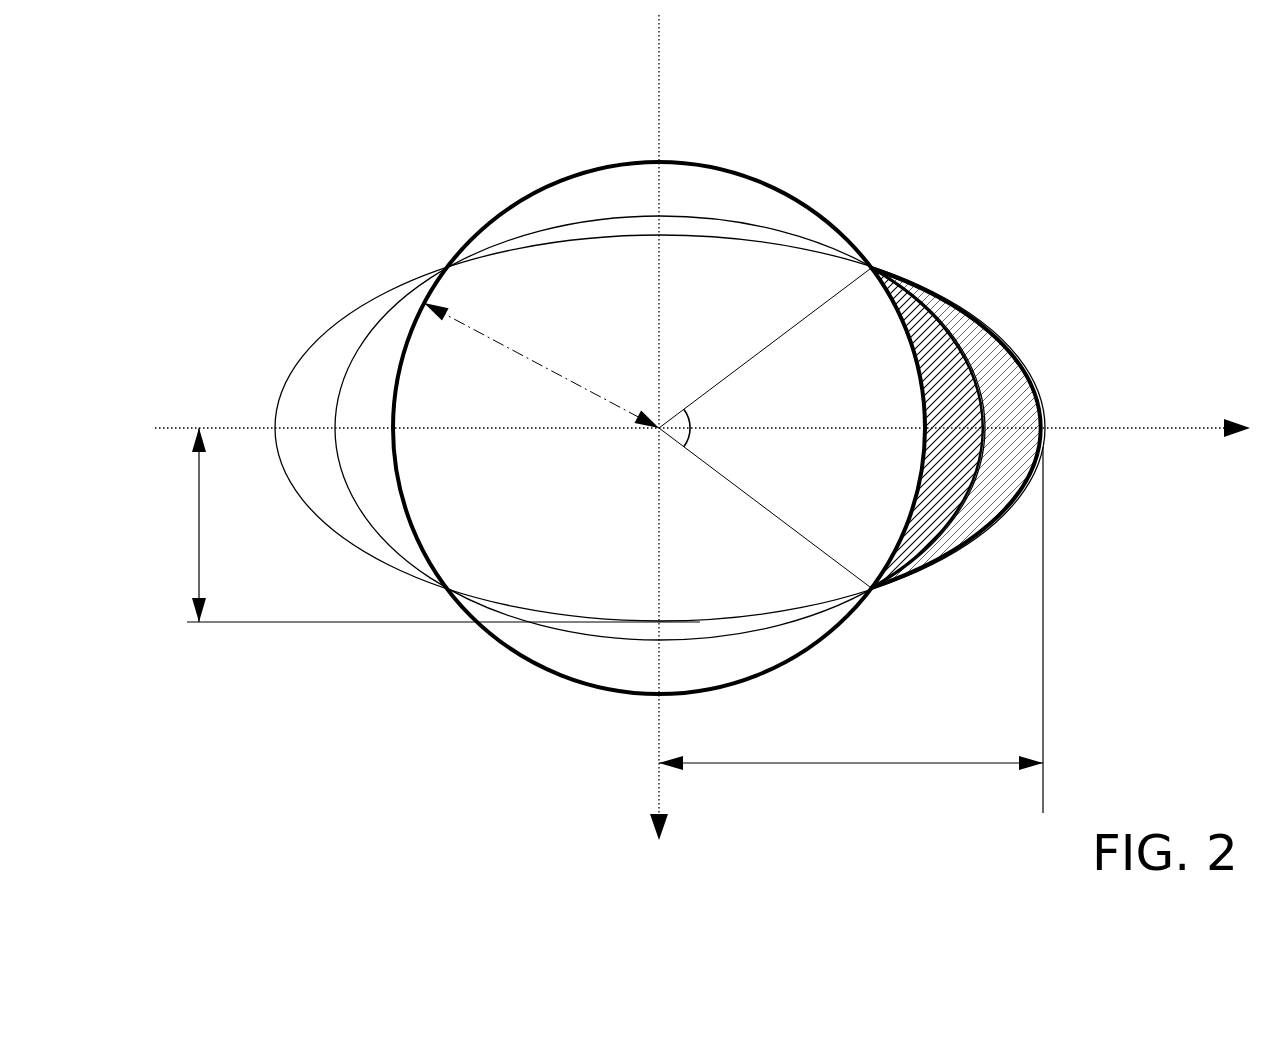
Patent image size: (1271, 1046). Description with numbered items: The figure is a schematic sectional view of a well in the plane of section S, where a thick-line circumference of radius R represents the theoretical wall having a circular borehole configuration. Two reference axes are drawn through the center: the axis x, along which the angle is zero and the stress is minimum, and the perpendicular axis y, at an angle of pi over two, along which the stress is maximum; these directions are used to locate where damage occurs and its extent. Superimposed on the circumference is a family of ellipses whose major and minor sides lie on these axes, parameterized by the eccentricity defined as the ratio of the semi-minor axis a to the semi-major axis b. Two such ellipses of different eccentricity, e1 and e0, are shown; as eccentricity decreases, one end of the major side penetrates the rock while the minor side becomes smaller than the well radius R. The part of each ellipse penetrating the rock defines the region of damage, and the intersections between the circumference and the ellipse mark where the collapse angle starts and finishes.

The plane of section S is at (497, 213).
The ellipse of eccentricity e0 is at (997, 332).
The ellipse of eccentricity e1 is at (927, 303).
The radius of the well R is at (541, 365).
The semi-minor axis of the ellipse a is at (443, 525).
The semi-major axis of the ellipse b is at (851, 630).
The axis of minimum stress direction x is at (728, 450).
The axis of maximum stress direction y is at (713, 432).